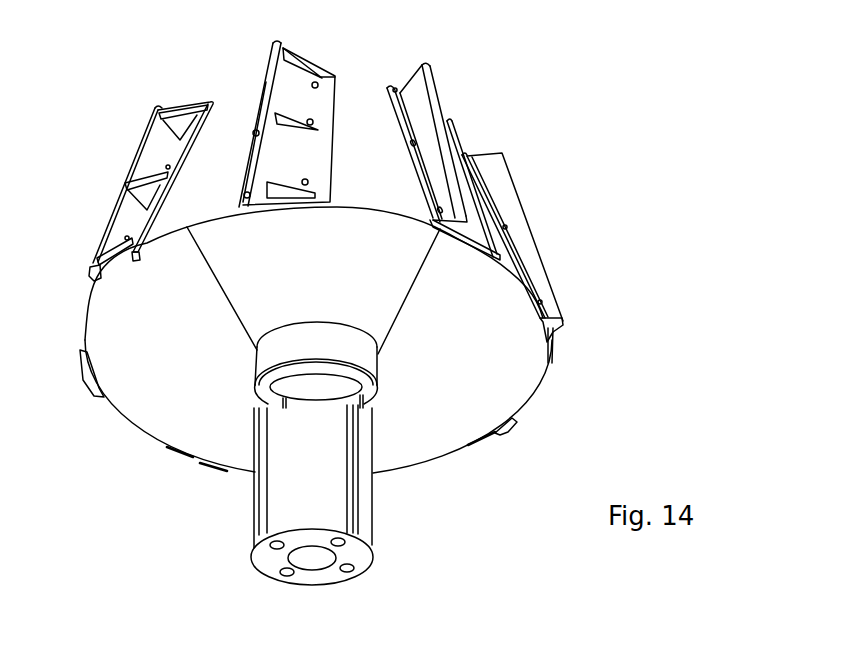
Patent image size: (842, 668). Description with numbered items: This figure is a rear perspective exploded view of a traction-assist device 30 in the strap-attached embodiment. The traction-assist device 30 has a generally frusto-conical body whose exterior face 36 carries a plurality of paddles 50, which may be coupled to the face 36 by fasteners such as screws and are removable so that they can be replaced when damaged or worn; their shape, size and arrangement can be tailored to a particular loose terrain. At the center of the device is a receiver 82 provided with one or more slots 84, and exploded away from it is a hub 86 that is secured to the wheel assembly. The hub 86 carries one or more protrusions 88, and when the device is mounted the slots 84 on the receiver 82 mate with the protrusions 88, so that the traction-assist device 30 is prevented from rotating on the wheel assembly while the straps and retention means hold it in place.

The traction-assist device 30 is at (533, 397).
The exterior face 36 is at (223, 133).
The paddles 50 is at (438, 93).
The receiver 82 is at (253, 377).
The slots 84 is at (360, 400).
The hub 86 is at (248, 533).
The protrusions 88 is at (348, 490).